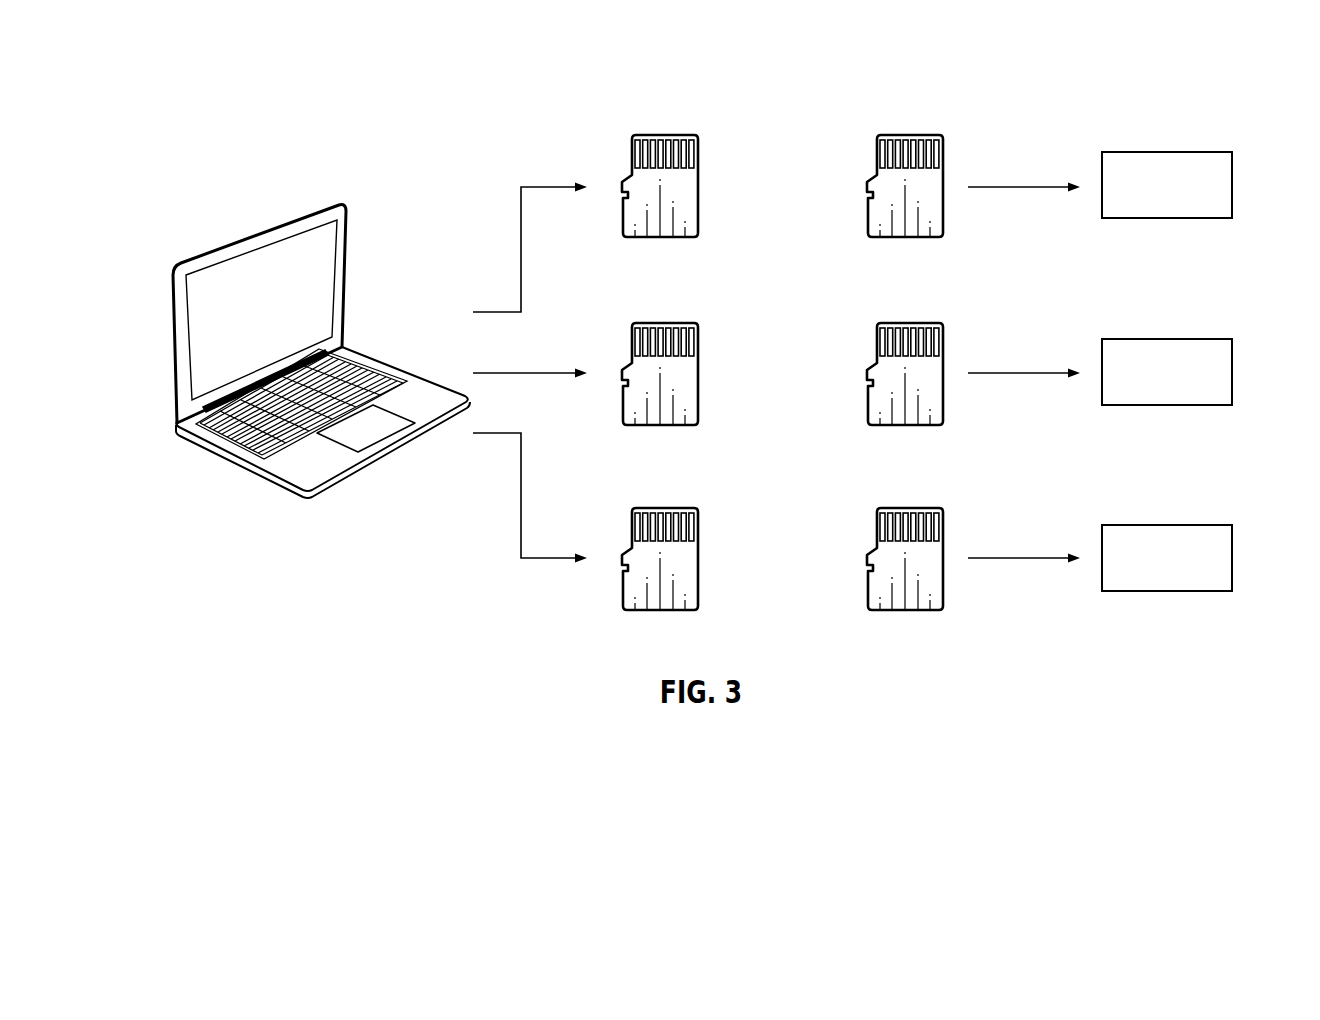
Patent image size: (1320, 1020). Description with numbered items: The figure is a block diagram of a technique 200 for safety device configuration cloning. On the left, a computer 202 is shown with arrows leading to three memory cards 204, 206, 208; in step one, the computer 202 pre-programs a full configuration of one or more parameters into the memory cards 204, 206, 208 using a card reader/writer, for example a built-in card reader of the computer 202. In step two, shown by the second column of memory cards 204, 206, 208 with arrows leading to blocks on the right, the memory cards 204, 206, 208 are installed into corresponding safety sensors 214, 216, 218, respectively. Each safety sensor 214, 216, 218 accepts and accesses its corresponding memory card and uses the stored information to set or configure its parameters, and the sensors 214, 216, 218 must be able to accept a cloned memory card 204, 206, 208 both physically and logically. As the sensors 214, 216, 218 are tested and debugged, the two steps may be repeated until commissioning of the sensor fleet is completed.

The system 200 is at (375, 76).
The computer 202 is at (260, 230).
The memory card 204 is at (663, 135).
The memory card 206 is at (663, 323).
The memory card 208 is at (663, 508).
The safety sensor 214 is at (1145, 198).
The safety sensor 216 is at (1145, 385).
The safety sensor 218 is at (1145, 571).